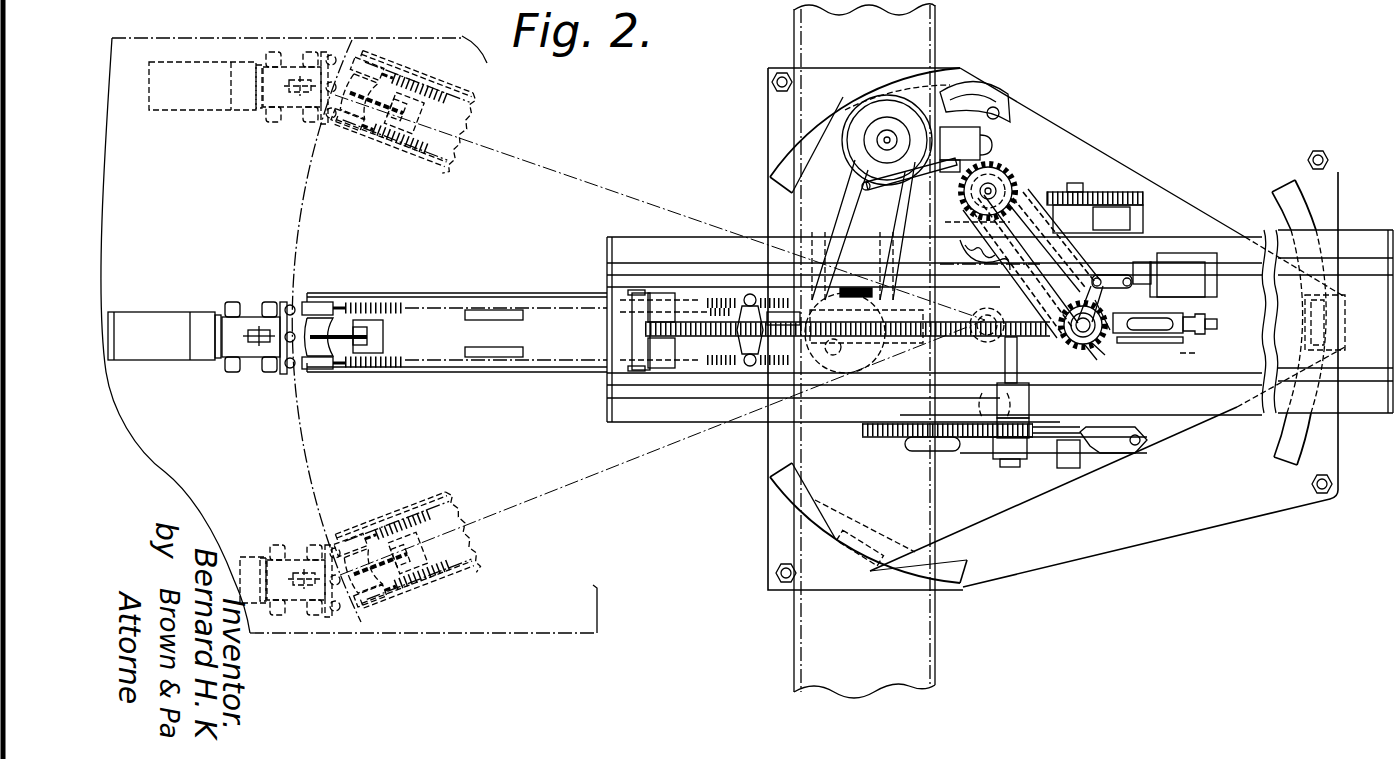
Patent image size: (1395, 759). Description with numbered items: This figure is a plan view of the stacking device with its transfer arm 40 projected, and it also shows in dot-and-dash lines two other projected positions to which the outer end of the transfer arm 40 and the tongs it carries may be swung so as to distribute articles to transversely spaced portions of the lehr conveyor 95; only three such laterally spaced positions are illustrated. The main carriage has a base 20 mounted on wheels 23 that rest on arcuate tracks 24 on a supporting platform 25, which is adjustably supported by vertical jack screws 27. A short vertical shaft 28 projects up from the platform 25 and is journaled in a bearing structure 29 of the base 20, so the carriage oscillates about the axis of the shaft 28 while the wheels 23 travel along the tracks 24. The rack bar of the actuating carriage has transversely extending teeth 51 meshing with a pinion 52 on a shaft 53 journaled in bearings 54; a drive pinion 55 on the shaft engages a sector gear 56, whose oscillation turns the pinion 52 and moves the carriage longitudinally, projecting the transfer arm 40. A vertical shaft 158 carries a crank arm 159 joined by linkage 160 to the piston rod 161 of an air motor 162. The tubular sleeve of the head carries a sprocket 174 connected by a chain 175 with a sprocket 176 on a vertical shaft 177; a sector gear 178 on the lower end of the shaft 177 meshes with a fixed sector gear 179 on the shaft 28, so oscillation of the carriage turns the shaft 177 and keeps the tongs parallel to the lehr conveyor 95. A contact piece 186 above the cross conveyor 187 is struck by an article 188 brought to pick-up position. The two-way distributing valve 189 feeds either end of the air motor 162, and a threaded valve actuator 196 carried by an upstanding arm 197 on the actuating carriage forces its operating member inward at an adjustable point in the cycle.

The base 20 is at (1168, 181).
The wheels 23 is at (853, 95).
The arcuate tracks 24 is at (782, 162).
The supporting platform 25 is at (1053, 329).
The vertical jack screws 27 is at (771, 82).
The vertical shaft 28 is at (987, 311).
The bearing structure 29 is at (962, 309).
The transfer arm 40 is at (428, 170).
The transversely extending teeth 51 is at (912, 337).
The pinion 52 is at (1080, 340).
The shaft 53 is at (1010, 358).
The bearings 54 is at (970, 253).
The drive pinion 55 is at (1012, 460).
The sector gear 56 is at (895, 440).
The lehr conveyor 95 is at (405, 636).
The vertical shaft 158 is at (1105, 352).
The crank arm 159 is at (1098, 302).
The linkage 160 is at (1118, 268).
The piston rod 161 is at (1147, 262).
The air motor 162 is at (1208, 258).
The sprocket 174 is at (1100, 350).
The chain 175 is at (1100, 262).
The sprocket 176 is at (989, 178).
The vertical shaft 177 is at (990, 191).
The sector gear 178 is at (969, 221).
The fixed sector gear 179 is at (977, 265).
The contact piece 186 is at (855, 290).
The cross conveyor 187 is at (940, 632).
The article 188 is at (890, 340).
The two-way distributing valve 189 is at (1192, 347).
The valve actuator 196 is at (1190, 318).
The upstanding arm 197 is at (1217, 328).